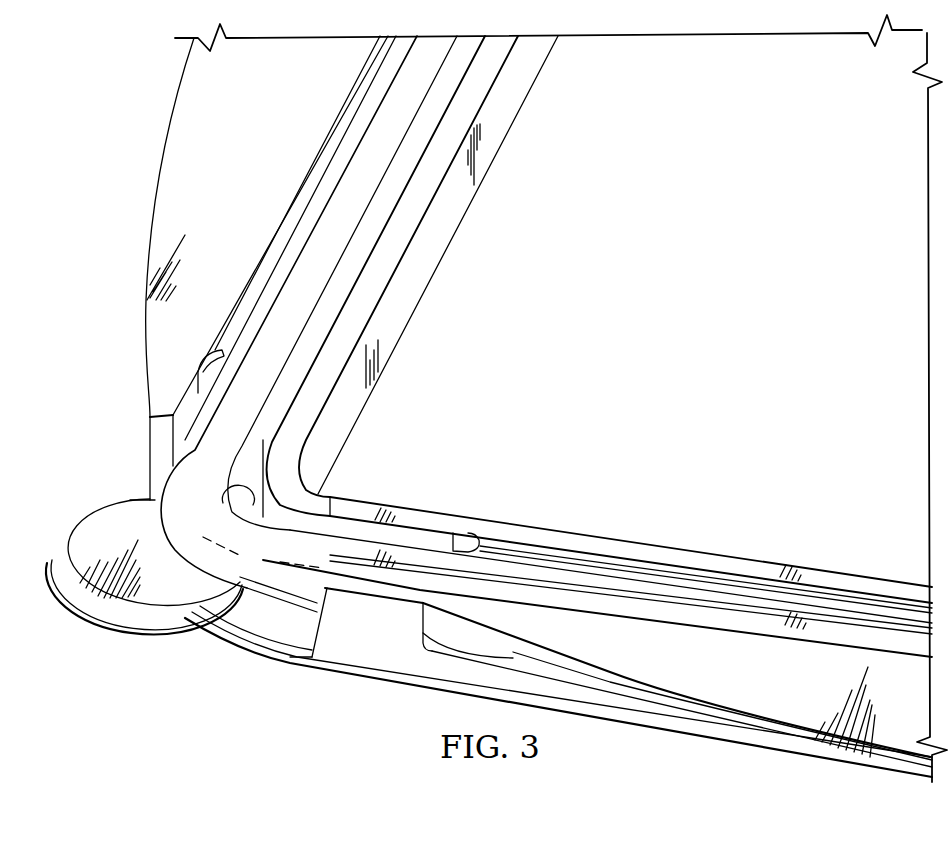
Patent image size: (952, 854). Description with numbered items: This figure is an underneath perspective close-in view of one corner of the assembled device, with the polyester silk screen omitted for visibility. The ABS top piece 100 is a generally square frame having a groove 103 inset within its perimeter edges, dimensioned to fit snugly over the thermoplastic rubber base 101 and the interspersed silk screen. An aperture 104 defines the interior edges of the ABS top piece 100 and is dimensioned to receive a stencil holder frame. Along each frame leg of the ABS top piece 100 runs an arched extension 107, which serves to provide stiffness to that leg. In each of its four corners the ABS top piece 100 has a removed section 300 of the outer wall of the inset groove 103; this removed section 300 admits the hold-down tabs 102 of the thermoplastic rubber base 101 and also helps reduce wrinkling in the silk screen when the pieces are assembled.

The ABS top piece 100 is at (360, 685).
The thermoplastic rubber base 101 is at (90, 628).
The hold-down tabs 102 is at (97, 522).
The groove 103 is at (425, 538).
The aperture 104 is at (660, 543).
The arched extension 107 is at (180, 110).
The removed section 300 is at (280, 638).